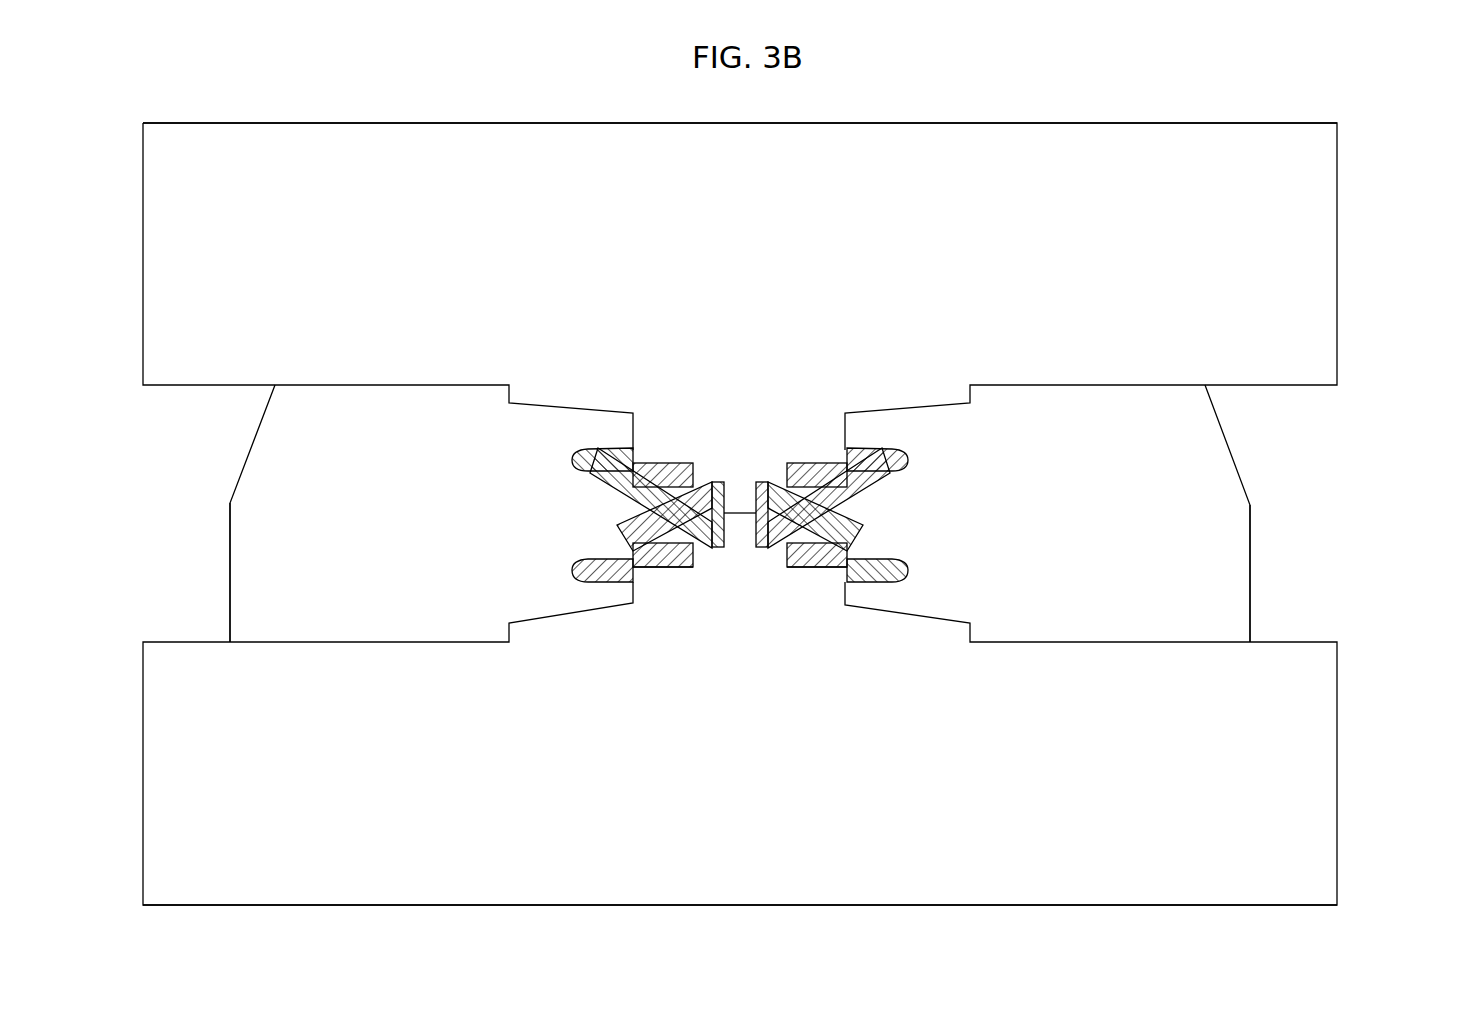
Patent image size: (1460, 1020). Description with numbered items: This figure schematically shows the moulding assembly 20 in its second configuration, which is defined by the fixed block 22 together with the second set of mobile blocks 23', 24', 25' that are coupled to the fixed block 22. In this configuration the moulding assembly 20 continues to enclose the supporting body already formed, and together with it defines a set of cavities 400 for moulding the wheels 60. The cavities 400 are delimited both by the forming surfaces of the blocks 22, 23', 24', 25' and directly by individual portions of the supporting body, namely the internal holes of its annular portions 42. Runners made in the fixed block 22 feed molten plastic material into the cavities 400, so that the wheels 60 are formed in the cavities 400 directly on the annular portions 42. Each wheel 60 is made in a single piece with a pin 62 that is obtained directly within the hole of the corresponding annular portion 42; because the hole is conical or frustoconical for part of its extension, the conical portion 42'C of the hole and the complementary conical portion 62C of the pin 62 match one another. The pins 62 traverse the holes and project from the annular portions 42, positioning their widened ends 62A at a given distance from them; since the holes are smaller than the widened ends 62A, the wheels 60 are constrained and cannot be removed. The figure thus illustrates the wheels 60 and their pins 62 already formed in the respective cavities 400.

The moulding assembly 20 is at (183, 102).
The mobile block 24' is at (740, 108).
The fixed block 22 is at (1308, 872).
The mobile block 23' is at (192, 572).
The mobile block 25' is at (1286, 573).
The cavities 400 is at (575, 478).
The wheels 60 is at (590, 553).
The conical portion of internal hole 42'C is at (747, 499).
The annular portions 42 is at (740, 461).
The pins 62 is at (773, 483).
The widened ends 62A is at (743, 548).
The conical portion of pin 62C is at (806, 568).